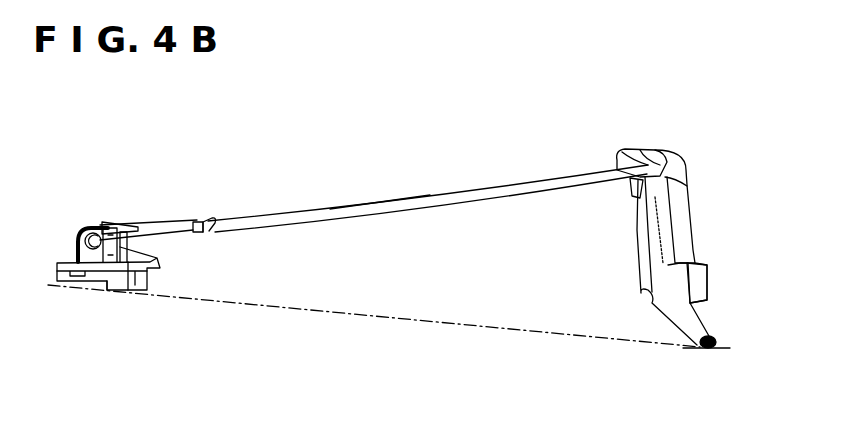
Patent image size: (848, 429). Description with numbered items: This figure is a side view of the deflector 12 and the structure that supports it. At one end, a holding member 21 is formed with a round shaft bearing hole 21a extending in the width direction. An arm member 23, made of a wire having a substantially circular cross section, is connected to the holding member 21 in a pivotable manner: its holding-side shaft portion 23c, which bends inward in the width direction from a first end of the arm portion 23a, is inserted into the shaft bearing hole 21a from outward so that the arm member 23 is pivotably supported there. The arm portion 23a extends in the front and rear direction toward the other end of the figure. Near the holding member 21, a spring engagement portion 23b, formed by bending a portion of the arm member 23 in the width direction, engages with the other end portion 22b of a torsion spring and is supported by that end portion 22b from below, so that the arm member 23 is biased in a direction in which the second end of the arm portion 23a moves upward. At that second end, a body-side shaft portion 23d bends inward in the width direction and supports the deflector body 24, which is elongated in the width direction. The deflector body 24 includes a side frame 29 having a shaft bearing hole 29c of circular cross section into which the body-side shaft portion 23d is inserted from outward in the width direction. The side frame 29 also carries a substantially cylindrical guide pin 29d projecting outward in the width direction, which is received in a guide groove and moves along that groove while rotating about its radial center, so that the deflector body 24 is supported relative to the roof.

The deflector 12 is at (712, 139).
The holding member 21 is at (77, 236).
The shaft bearing hole 21a is at (100, 283).
The other end portion of the torsion spring 22b is at (200, 238).
The arm member 23 is at (452, 192).
The arm portion 23a is at (398, 200).
The spring engagement portion 23b is at (207, 218).
The holding-side shaft portion 23c is at (90, 227).
The body-side shaft portion 23d is at (660, 150).
The deflector body 24 is at (697, 283).
The side frame 29 is at (783, 222).
The shaft bearing hole 29c is at (637, 190).
The guide pin 29d is at (690, 350).